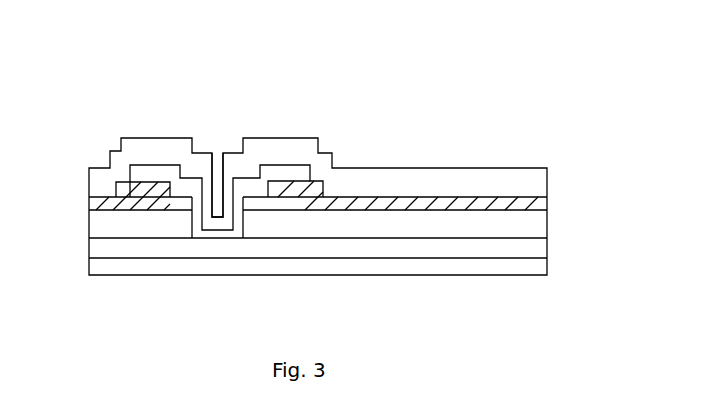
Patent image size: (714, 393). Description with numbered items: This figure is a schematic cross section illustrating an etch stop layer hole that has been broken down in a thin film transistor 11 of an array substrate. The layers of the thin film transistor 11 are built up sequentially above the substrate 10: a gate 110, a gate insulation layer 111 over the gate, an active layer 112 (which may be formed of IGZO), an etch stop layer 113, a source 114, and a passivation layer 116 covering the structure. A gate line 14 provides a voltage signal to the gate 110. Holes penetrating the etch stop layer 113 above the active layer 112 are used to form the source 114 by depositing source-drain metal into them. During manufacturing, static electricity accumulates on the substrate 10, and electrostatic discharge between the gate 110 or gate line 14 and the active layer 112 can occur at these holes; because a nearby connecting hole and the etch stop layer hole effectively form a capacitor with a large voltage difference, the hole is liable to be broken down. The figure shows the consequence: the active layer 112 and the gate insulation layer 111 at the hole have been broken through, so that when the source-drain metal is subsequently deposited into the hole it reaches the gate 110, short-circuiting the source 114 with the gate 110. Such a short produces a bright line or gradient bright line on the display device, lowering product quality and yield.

The thin film transistor 11 is at (377, 108).
The substrate 10 is at (532, 268).
The gate line 14 is at (540, 250).
The gate 110 is at (210, 242).
The gate insulation layer 111 is at (537, 229).
The active layer 112 is at (150, 207).
The etch stop layer 113 is at (535, 210).
The source 114 is at (146, 168).
The passivation layer 116 is at (523, 178).